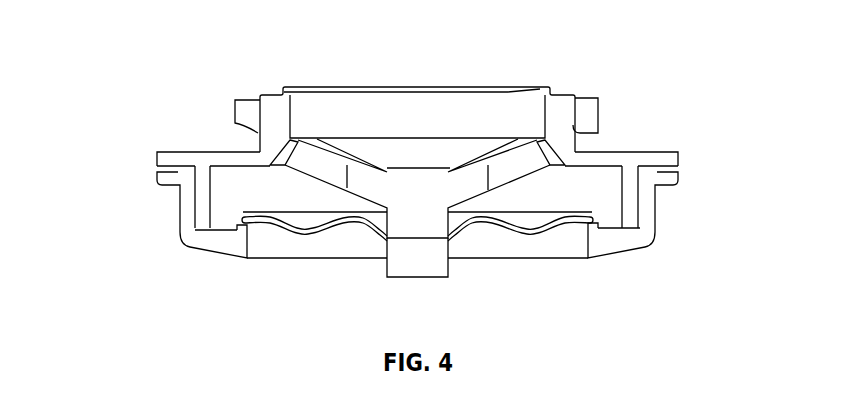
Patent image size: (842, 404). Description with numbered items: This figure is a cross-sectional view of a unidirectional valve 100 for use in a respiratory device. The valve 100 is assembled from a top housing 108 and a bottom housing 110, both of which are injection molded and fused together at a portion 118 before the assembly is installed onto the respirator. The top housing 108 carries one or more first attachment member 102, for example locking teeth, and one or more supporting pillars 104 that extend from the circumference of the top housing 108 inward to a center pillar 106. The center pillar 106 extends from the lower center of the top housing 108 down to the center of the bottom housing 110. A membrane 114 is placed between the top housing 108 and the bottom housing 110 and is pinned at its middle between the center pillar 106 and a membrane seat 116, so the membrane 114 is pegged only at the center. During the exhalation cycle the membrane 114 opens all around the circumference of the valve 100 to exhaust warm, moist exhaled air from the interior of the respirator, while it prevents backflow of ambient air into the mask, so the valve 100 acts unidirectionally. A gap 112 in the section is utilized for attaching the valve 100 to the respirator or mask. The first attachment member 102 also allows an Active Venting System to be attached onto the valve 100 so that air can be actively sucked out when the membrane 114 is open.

The unidirectional valve 100 is at (564, 50).
The first attachment member 102 is at (255, 115).
The supporting pillar 104 is at (333, 170).
The center pillar 106 is at (413, 213).
The top housing 108 is at (454, 98).
The bottom housing 110 is at (558, 260).
The gap 112 is at (149, 168).
The membrane 114 is at (296, 227).
The membrane seat 116 is at (418, 259).
The portion 118 is at (632, 228).